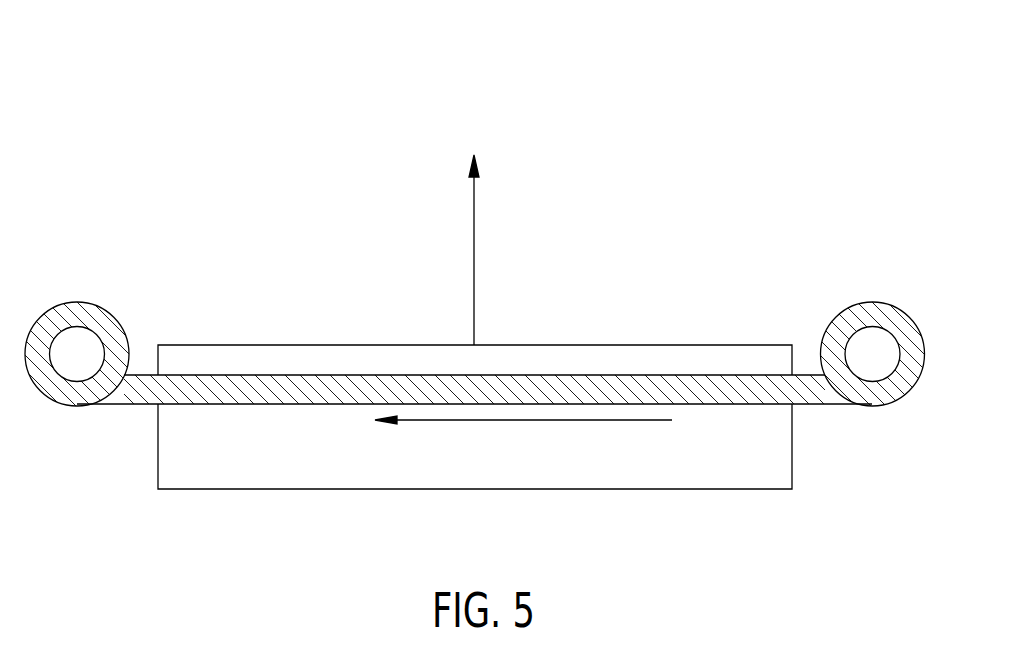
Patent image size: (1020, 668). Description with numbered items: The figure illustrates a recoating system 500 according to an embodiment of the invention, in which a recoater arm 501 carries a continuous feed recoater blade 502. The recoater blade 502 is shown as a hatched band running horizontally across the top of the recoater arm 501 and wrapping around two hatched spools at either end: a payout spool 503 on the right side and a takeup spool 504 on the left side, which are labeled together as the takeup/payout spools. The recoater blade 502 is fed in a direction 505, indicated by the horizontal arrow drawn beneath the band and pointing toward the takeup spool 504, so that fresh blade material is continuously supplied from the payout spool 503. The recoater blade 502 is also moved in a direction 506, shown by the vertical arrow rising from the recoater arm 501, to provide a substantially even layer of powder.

The recoating system 500 is at (537, 107).
The recoater arm 501 is at (743, 489).
The continuous feed recoater blade 502 is at (143, 375).
The payout spool 503 is at (870, 405).
The takeup spool 504 is at (80, 302).
The direction 505 is at (540, 419).
The direction 506 is at (489, 250).